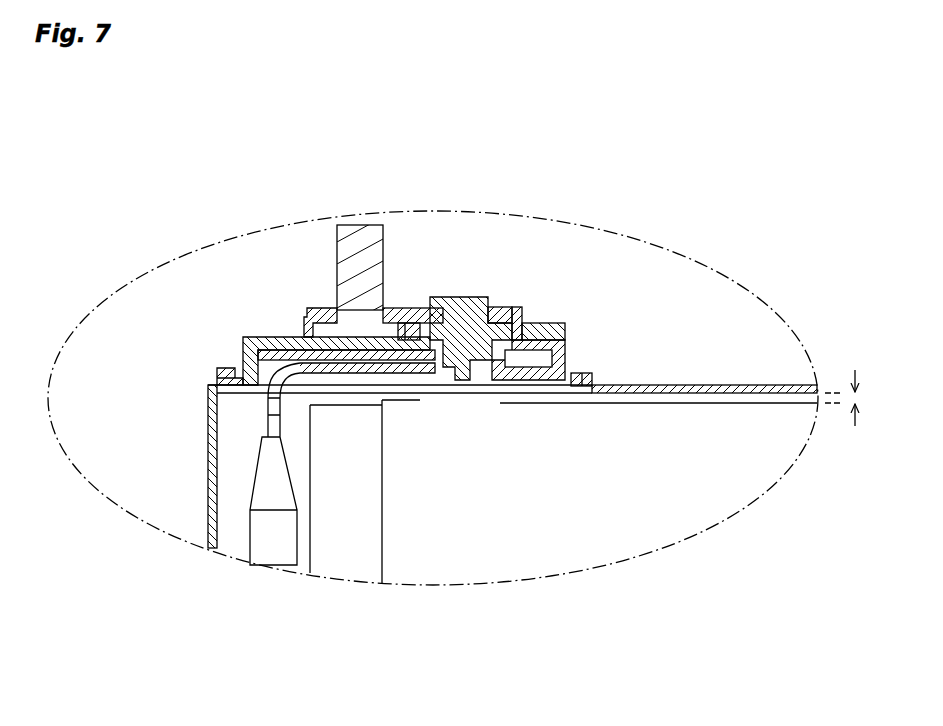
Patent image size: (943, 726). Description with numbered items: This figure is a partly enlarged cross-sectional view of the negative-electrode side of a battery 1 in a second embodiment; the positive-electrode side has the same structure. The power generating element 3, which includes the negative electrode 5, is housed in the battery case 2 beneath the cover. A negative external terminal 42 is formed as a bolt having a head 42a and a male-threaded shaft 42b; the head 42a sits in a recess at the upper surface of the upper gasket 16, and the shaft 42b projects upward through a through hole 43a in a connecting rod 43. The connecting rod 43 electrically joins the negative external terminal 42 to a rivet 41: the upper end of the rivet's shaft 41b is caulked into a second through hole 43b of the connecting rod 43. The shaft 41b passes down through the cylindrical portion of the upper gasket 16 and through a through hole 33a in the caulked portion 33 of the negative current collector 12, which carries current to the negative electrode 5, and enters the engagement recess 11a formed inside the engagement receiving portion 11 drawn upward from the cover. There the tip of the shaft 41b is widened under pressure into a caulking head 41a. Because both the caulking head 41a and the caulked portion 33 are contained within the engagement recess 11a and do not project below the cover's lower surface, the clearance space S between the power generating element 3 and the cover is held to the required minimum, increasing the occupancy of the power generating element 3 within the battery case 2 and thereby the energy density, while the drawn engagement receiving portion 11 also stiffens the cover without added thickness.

The nonaqueous electrolytic secondary battery 1 is at (792, 210).
The battery case 2 is at (208, 512).
The power generating element 3 is at (626, 545).
The negative electrode 5 is at (365, 572).
The engagement receiving portion 11 is at (577, 386).
The engagement recess 11a is at (537, 380).
The negative current collector 12 is at (250, 537).
The upper gasket 16 is at (243, 344).
The caulked portion 33 is at (552, 373).
The through hole 33a is at (450, 380).
The rivet 41 is at (513, 303).
The caulking head 41a is at (505, 382).
The shaft 41b is at (523, 350).
The negative external terminal 42 is at (337, 236).
The head 42a is at (337, 308).
The shaft 42b is at (364, 240).
The connecting rod 43 is at (523, 327).
The through hole 43a is at (327, 340).
The through hole 43b is at (488, 300).
The clearance space S is at (844, 383).